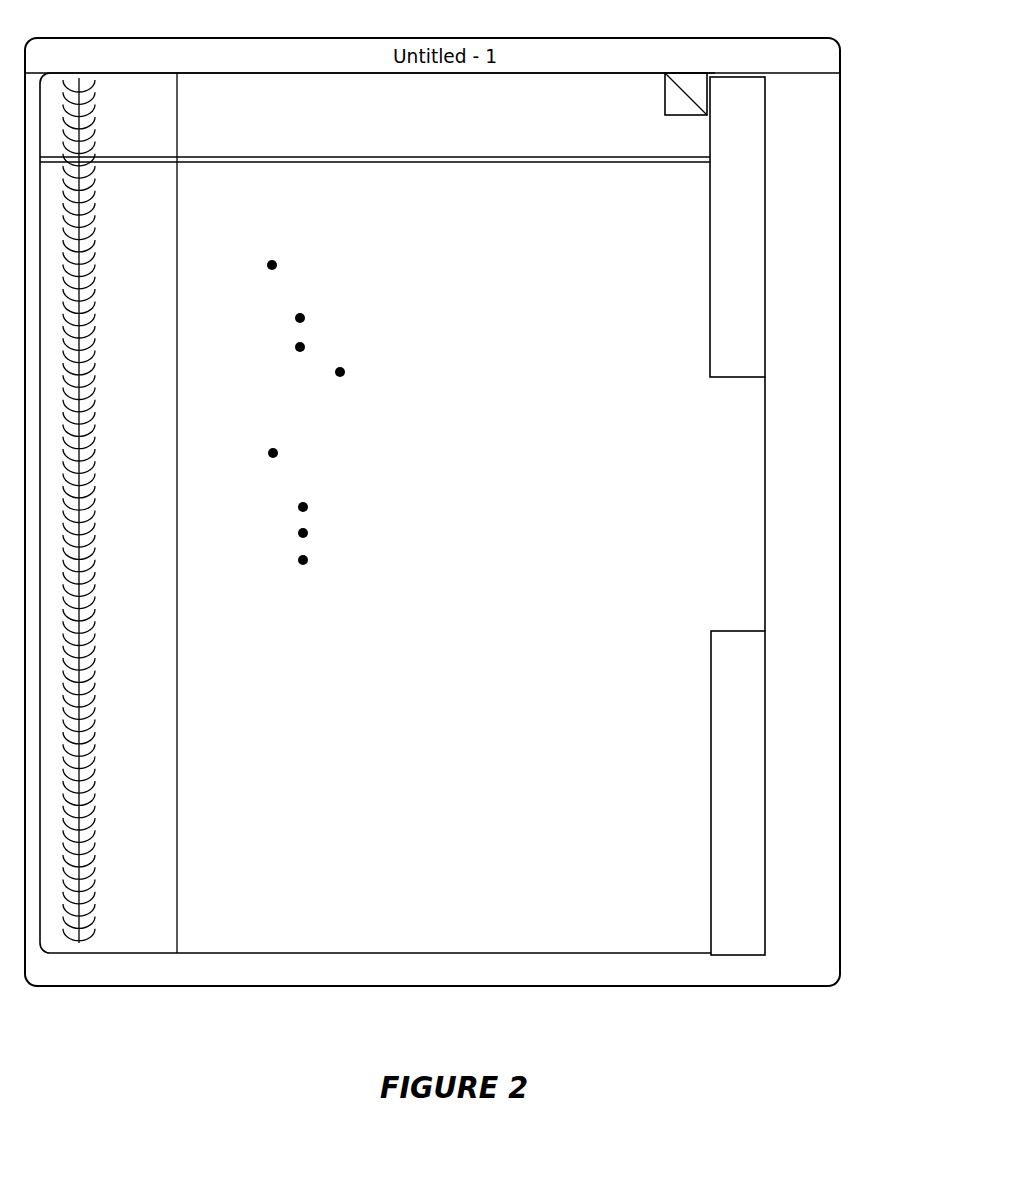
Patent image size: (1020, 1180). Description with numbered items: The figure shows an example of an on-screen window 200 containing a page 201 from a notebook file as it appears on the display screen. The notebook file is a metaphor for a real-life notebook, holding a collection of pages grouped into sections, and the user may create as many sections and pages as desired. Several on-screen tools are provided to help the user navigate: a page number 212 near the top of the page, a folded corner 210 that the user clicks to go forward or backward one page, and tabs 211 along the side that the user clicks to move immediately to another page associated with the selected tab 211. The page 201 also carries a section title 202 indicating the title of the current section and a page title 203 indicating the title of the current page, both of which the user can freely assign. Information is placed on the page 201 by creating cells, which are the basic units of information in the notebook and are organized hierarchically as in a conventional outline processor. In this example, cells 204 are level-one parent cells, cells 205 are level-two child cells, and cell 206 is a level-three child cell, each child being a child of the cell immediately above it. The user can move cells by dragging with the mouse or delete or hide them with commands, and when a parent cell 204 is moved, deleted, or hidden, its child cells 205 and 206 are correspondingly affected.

The window 200 is at (600, 986).
The page 201 is at (640, 891).
The section title 202 is at (364, 92).
The page title 203 is at (347, 133).
The parent cell 204 is at (358, 268).
The child cell 205 is at (524, 322).
The child cell 206 is at (586, 376).
The folded corner 210 is at (673, 98).
The tab 211 is at (745, 172).
The page number 212 is at (638, 83).